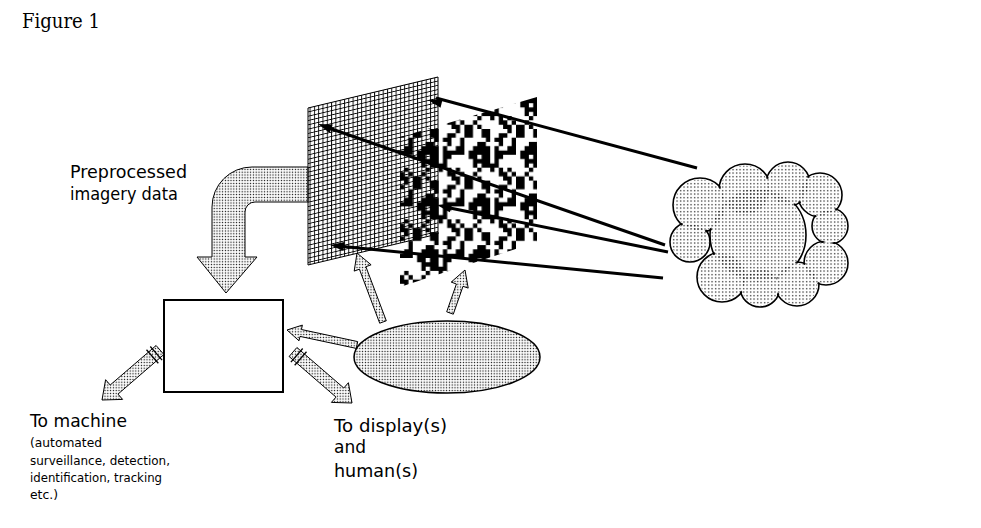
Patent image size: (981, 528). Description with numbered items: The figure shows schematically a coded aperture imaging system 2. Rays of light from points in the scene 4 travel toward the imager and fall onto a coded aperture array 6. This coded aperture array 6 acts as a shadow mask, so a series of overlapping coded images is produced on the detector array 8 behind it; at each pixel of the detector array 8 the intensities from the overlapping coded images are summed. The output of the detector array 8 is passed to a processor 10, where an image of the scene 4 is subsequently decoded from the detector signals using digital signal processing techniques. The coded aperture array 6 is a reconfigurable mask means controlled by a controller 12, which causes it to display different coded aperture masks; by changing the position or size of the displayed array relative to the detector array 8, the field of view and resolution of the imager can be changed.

The coded aperture imaging system 2 is at (589, 96).
The scene 4 is at (759, 234).
The coded aperture array 6 is at (539, 160).
The detector array 8 is at (332, 102).
The processor 10 is at (175, 322).
The controller 12 is at (520, 365).